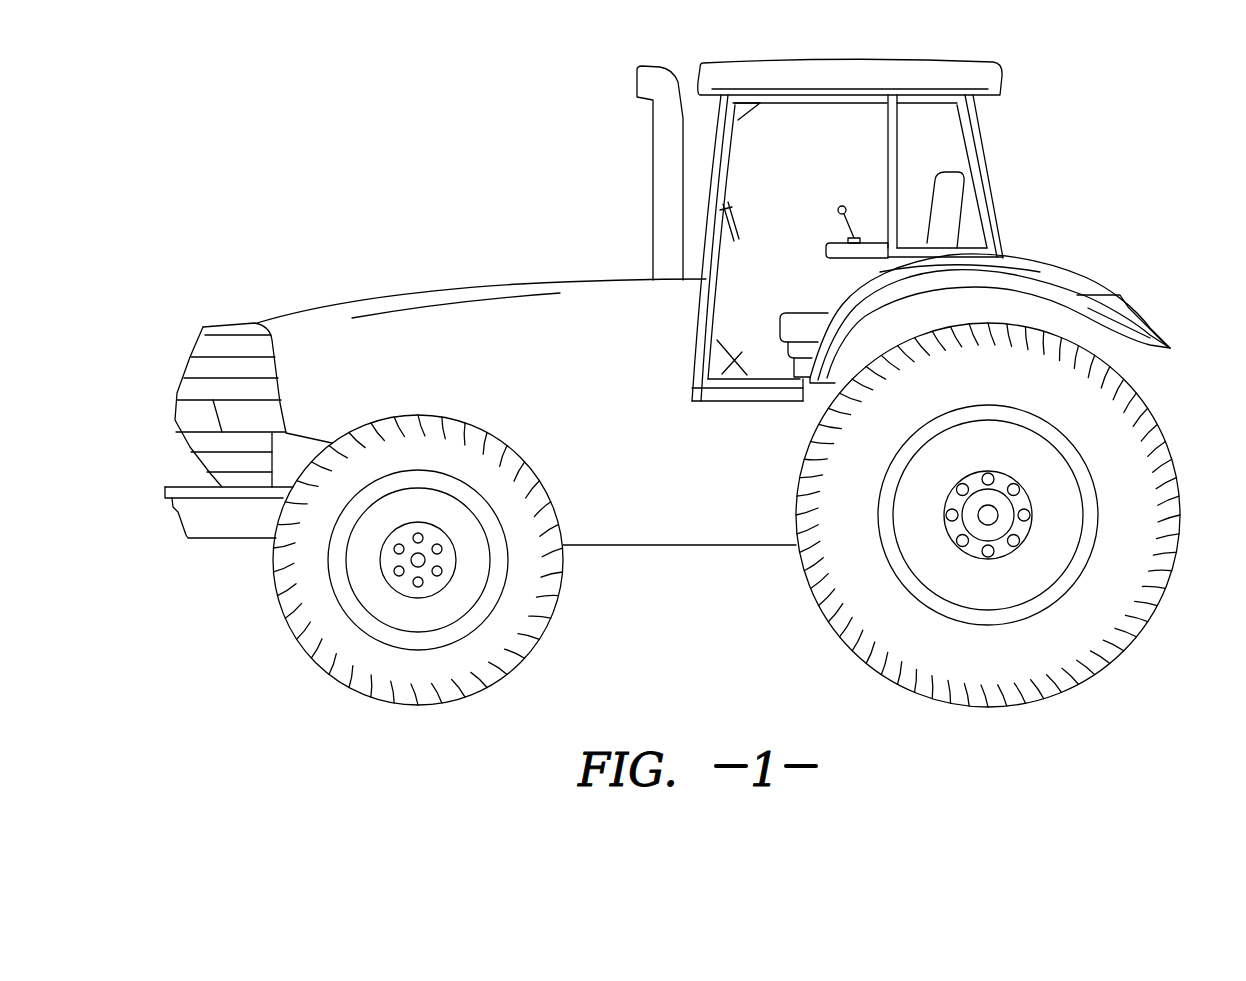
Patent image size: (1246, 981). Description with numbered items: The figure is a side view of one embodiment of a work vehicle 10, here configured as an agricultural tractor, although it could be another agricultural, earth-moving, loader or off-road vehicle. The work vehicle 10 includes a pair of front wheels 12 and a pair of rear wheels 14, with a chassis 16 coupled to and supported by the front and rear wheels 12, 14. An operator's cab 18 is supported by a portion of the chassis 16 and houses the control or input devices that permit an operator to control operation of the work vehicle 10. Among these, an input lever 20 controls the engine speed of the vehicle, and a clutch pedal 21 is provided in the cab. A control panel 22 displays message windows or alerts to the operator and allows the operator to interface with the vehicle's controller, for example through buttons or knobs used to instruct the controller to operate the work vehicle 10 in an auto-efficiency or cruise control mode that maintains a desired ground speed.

The work vehicle 10 is at (313, 190).
The front wheels 12 is at (273, 578).
The rear wheels 14 is at (1178, 540).
The chassis 16 is at (630, 547).
The operator's cab 18 is at (993, 185).
The input lever 20 is at (838, 210).
The clutch pedal 21 is at (738, 368).
The control panel 22 is at (732, 213).